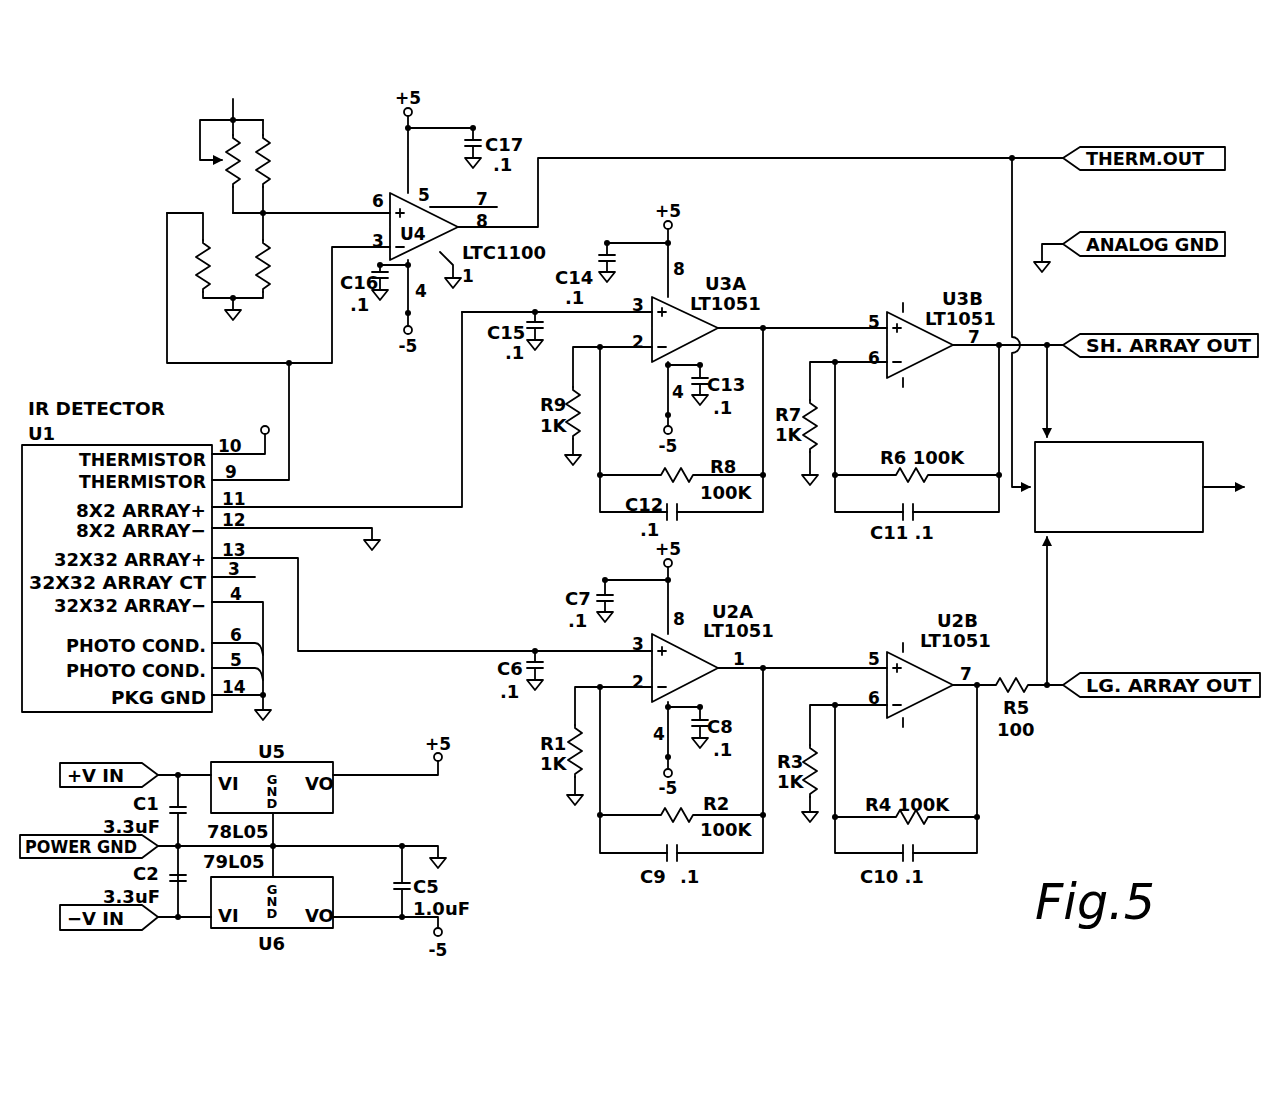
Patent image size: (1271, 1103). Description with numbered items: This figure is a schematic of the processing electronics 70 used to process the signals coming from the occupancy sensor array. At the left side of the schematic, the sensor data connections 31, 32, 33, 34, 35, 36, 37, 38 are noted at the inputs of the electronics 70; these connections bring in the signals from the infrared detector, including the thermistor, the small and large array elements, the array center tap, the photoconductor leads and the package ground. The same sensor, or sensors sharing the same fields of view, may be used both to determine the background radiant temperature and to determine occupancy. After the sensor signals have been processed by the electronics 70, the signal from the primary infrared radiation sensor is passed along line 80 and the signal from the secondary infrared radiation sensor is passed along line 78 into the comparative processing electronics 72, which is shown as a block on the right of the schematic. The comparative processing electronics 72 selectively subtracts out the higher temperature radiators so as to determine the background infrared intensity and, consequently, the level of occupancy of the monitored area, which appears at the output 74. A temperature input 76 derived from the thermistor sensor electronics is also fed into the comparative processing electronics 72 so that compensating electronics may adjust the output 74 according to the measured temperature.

The electronics 70 is at (105, 272).
The comparative processing electronics 72 is at (1140, 442).
The output 74 is at (1215, 485).
The temperature input 76 is at (1013, 492).
The line 78 is at (1049, 383).
The line 80 is at (1049, 616).
The sensor data connection 31 is at (299, 613).
The sensor data connection 32 is at (264, 608).
The sensor data connection 33 is at (356, 506).
The sensor data connection 34 is at (377, 531).
The sensor data connection 35 is at (265, 686).
The sensor data connection 36 is at (265, 652).
The sensor data connection 37 is at (258, 453).
The sensor data connection 38 is at (290, 477).